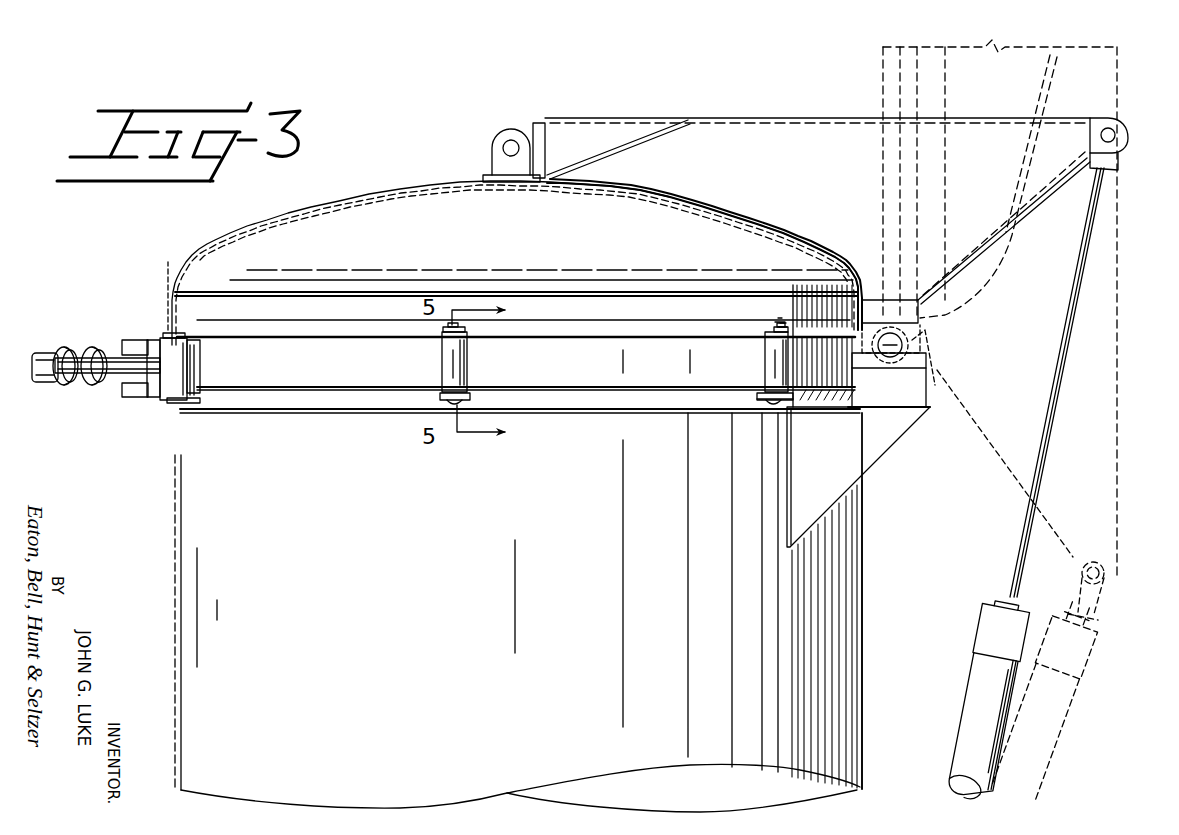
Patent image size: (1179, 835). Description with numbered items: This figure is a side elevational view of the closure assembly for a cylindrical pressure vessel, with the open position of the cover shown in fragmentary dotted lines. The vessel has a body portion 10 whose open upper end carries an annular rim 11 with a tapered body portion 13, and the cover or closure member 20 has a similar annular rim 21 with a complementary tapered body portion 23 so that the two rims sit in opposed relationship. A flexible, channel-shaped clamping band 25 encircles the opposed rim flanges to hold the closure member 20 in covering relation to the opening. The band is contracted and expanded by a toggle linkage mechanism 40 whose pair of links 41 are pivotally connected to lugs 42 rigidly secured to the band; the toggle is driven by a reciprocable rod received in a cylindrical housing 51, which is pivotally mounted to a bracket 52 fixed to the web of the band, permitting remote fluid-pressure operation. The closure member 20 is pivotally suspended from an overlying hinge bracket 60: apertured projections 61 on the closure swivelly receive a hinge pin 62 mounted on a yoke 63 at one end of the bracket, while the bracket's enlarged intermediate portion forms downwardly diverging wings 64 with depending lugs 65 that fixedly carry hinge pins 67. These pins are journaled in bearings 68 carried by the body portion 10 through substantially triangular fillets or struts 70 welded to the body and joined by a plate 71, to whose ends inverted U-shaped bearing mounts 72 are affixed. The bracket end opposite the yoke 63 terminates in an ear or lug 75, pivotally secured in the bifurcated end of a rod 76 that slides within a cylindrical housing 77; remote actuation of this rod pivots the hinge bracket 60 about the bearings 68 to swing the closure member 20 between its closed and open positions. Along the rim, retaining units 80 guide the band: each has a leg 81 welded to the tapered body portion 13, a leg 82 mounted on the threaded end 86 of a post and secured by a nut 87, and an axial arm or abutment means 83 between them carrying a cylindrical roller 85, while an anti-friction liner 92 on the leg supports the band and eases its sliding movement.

The body portion 10 is at (178, 545).
The annular rim 11 is at (183, 402).
The tapered body portion 13 is at (568, 411).
The closure member 20 is at (236, 268).
The annular rim 21 is at (216, 326).
The tapered body portion 23 is at (593, 336).
The flexible clamping band 25 is at (303, 364).
The toggle linkage mechanism 40 is at (95, 381).
The links 41 is at (140, 343).
The lugs 42 is at (150, 340).
The cylindrical housing 51 is at (78, 358).
The bracket 52 is at (76, 386).
The hinge bracket 60 is at (750, 112).
The projections 61 is at (490, 178).
The hinge pin 62 is at (503, 148).
The yoke 63 is at (508, 129).
The wings 64 is at (792, 190).
The ears or lugs 65 is at (925, 368).
The hinge pins 67 is at (908, 343).
The bearings 68 is at (912, 352).
The fillets or struts 70 is at (858, 460).
The plate 71 is at (892, 386).
The bearing mounts 72 is at (918, 395).
The ear or lug 75 is at (1120, 118).
The rod 76 is at (1034, 552).
The cylindrical housing 77 is at (1063, 728).
The retaining units 80 is at (207, 388).
The leg 81 is at (470, 398).
The leg 82 is at (762, 335).
The axial arm or abutment means 83 is at (196, 352).
The cylindrical roller 85 is at (465, 372).
The threaded end 86 is at (783, 322).
The nut 87 is at (800, 332).
The anti-friction liner 92 is at (752, 378).